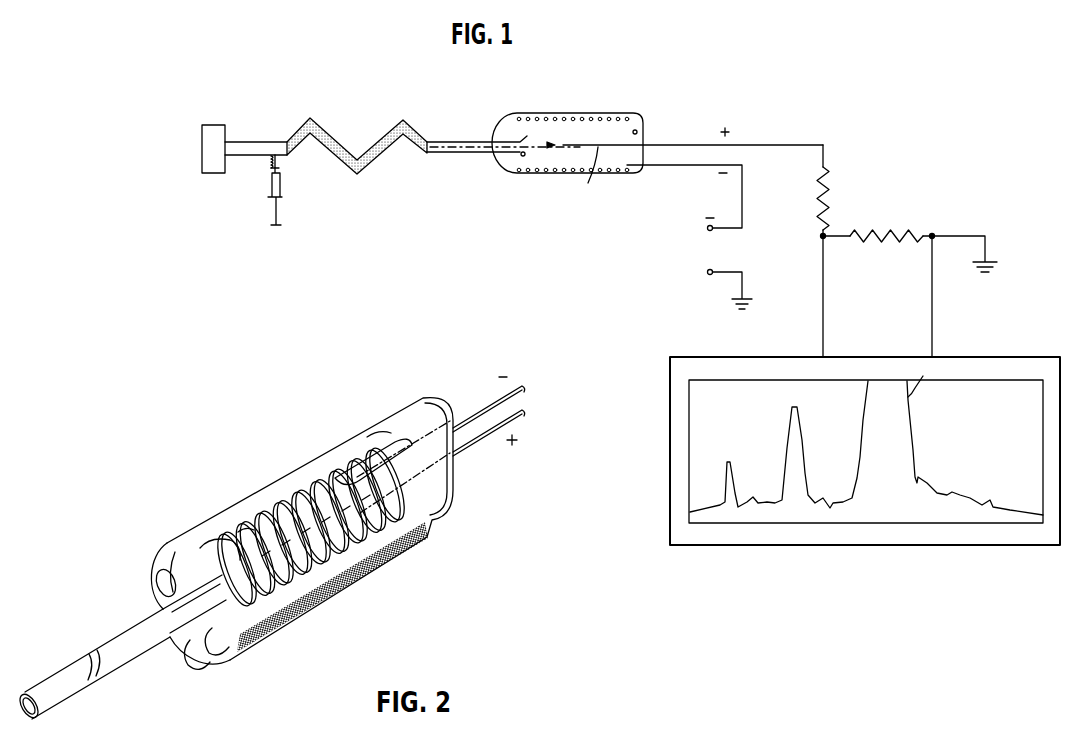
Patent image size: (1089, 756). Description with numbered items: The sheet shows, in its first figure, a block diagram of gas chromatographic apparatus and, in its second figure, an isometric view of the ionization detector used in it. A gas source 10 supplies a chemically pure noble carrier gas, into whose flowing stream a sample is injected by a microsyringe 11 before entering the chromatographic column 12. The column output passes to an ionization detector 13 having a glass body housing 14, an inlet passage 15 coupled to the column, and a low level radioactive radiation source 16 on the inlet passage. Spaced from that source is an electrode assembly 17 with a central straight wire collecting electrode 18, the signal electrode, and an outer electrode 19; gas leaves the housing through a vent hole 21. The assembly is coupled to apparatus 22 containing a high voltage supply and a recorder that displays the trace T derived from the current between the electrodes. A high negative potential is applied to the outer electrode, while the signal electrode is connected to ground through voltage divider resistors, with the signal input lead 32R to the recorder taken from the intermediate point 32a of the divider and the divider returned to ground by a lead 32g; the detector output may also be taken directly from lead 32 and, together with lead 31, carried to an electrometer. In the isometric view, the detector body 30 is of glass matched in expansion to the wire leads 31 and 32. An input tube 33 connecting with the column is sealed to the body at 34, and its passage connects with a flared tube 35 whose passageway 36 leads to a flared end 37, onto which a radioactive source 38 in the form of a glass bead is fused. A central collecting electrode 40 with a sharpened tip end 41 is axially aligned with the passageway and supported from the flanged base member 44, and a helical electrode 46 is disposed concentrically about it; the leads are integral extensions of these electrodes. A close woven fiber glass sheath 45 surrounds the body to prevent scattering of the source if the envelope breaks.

In FIG. 1, the gas source 10 is at (218, 125).
In FIG. 1, the microsyringe 11 is at (268, 173).
In FIG. 1, the chromatographic column 12 is at (337, 139).
In FIG. 1, the ionization detector 13 is at (645, 160).
In FIG. 1, the glass body housing 14 is at (512, 117).
In FIG. 1, the inlet passage 15 is at (457, 140).
In FIG. 1, the radioactive radiation source 16 is at (523, 157).
In FIG. 1, the electrode assembly 17 is at (603, 131).
In FIG. 2, the electrode assembly 17 is at (313, 498).
In FIG. 1, the central straight wire collecting electrode 18 is at (665, 187).
In FIG. 1, the outer electrode 19 is at (553, 113).
In FIG. 1, the vent hole 21 is at (642, 135).
In FIG. 1, the recorder apparatus 22 is at (992, 354).
In FIG. 1, the wire lead 31 is at (742, 210).
In FIG. 2, the wire lead 31 is at (524, 390).
In FIG. 1, the wire lead 32 is at (823, 167).
In FIG. 2, the wire lead 32 is at (524, 414).
In FIG. 1, the junction 32a is at (825, 238).
In FIG. 1, the signal input lead 32R is at (845, 312).
In FIG. 1, the ground lead 32g is at (930, 312).
In FIG. 2, the glass body 30 is at (342, 438).
In FIG. 2, the input tube 33 is at (116, 640).
In FIG. 2, the seal 34 is at (163, 597).
In FIG. 2, the flared tube 35 is at (170, 560).
In FIG. 2, the passageway 36 is at (193, 640).
In FIG. 2, the flared end 37 is at (208, 550).
In FIG. 2, the radioactive source 38 is at (220, 663).
In FIG. 2, the central collecting electrode 40 is at (295, 540).
In FIG. 2, the tip end 41 is at (260, 560).
In FIG. 2, the flanged base member 44 is at (450, 488).
In FIG. 2, the fiber glass sheath 45 is at (323, 610).
In FIG. 2, the helical electrode 46 is at (242, 530).